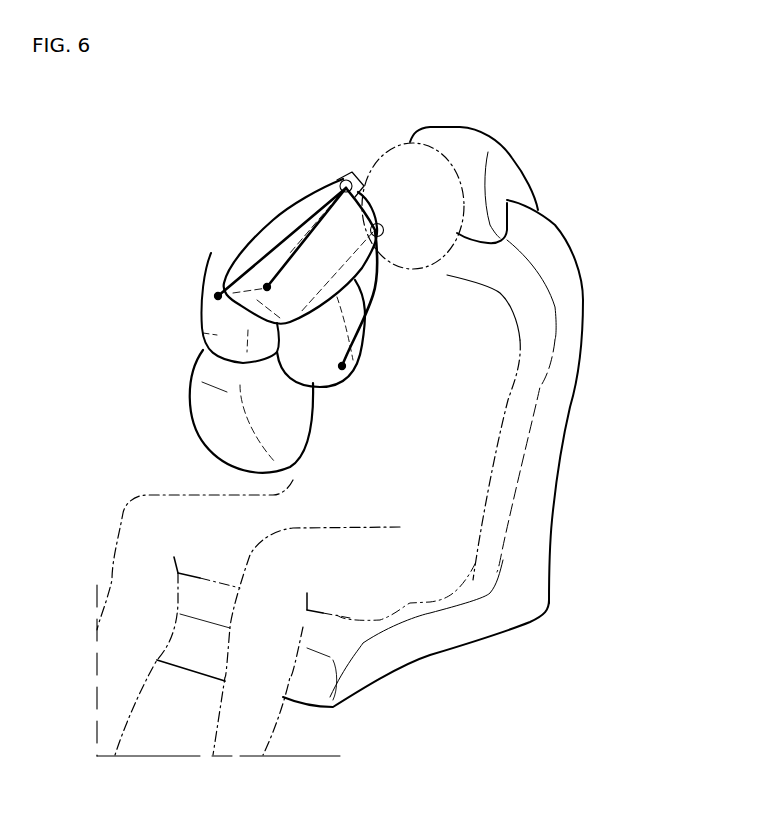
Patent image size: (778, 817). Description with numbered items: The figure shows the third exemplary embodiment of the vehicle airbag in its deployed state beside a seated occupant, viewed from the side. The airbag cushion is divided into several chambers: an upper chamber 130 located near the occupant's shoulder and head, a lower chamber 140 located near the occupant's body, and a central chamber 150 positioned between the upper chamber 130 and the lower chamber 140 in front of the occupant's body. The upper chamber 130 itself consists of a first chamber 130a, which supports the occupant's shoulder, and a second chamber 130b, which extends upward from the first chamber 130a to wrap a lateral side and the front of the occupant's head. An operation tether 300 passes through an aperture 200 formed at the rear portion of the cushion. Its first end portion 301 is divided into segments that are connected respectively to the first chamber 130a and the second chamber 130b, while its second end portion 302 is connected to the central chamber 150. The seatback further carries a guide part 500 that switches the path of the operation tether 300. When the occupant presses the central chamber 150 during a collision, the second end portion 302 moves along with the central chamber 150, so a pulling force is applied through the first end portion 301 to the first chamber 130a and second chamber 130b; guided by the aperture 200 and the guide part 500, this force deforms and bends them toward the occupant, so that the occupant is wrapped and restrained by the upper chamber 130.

The upper chamber 130 is at (117, 222).
The first chamber 130a is at (200, 327).
The second chamber 130b is at (217, 247).
The lower chamber 140 is at (215, 437).
The central chamber 150 is at (275, 370).
The aperture 200 is at (337, 178).
The operation tether 300 is at (313, 200).
The first end portion 301 is at (300, 245).
The second end portion 302 is at (370, 315).
The guide part 500 is at (383, 233).